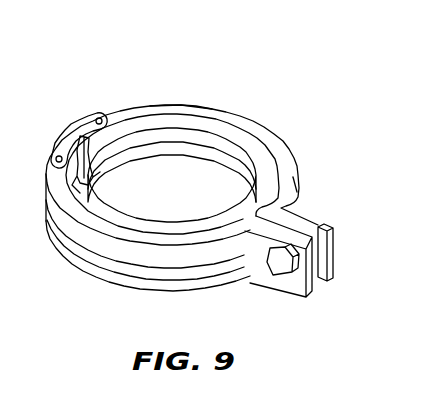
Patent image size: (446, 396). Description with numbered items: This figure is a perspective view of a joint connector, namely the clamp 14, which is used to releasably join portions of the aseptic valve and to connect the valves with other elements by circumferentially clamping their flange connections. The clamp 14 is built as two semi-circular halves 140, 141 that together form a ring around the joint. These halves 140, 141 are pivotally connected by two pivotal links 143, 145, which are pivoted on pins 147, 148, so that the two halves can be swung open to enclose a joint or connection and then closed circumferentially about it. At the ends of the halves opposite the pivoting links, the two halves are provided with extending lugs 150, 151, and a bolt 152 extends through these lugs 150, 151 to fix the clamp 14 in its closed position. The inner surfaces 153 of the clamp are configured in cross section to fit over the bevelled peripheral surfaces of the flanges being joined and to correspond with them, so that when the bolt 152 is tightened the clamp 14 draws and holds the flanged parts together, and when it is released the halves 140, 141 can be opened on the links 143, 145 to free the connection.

The clamp 14 is at (263, 120).
The semi-circular half 140 is at (136, 269).
The semi-circular half 141 is at (204, 90).
The pivotal link 143 is at (71, 135).
The pivotal link 145 is at (89, 181).
The pin 147 is at (55, 156).
The pin 148 is at (99, 118).
The lug 150 is at (250, 281).
The lug 151 is at (308, 226).
The bolt 152 is at (280, 273).
The inner surface 153 is at (186, 145).